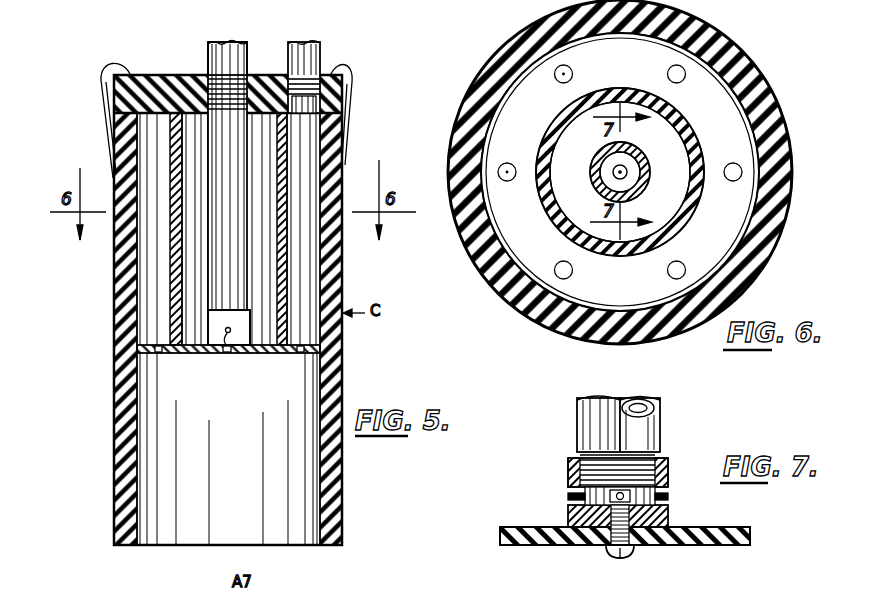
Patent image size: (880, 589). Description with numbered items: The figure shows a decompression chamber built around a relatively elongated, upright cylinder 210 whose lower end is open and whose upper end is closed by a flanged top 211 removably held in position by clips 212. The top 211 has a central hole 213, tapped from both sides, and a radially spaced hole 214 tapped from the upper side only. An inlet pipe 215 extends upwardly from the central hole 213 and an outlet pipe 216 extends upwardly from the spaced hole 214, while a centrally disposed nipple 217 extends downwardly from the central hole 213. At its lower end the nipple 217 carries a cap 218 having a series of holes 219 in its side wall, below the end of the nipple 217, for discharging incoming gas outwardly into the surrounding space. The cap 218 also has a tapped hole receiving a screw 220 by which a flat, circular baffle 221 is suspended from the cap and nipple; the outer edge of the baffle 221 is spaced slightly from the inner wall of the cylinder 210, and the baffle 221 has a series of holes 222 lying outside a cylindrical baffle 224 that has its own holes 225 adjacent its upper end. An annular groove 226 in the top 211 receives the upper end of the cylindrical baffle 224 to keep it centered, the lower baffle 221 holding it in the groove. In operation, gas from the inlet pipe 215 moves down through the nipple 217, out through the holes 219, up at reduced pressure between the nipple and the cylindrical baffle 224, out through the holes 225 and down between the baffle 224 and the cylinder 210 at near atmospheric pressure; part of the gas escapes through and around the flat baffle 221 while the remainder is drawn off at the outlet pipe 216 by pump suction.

In FIG. 5, the cylinder 210 is at (343, 355).
In FIG. 6, the cylinder 210 is at (764, 252).
In FIG. 5, the flanged top 211 is at (171, 76).
In FIG. 5, the clips 212 is at (103, 78).
In FIG. 5, the central hole 213 is at (250, 83).
In FIG. 5, the radially spaced hole 214 is at (286, 72).
In FIG. 5, the inlet pipe 215 is at (211, 42).
In FIG. 5, the outlet pipe 216 is at (312, 48).
In FIG. 5, the nipple 217 is at (236, 200).
In FIG. 6, the nipple 217 is at (645, 151).
In FIG. 7, the nipple 217 is at (657, 415).
In FIG. 5, the cap 218 is at (216, 322).
In FIG. 7, the cap 218 is at (666, 469).
In FIG. 5, the holes 219 is at (220, 352).
In FIG. 7, the holes 219 is at (568, 497).
In FIG. 5, the screw 220 is at (227, 348).
In FIG. 6, the screw 220 is at (612, 172).
In FIG. 7, the screw 220 is at (612, 551).
In FIG. 5, the flat circular baffle 221 is at (269, 355).
In FIG. 6, the flat circular baffle 221 is at (732, 219).
In FIG. 7, the flat circular baffle 221 is at (512, 527).
In FIG. 5, the holes 222 is at (158, 353).
In FIG. 6, the holes 222 is at (571, 68).
In FIG. 5, the cylindrical baffle 224 is at (287, 198).
In FIG. 6, the cylindrical baffle 224 is at (545, 128).
In FIG. 5, the holes 225 is at (178, 128).
In FIG. 5, the annular groove 226 is at (192, 112).